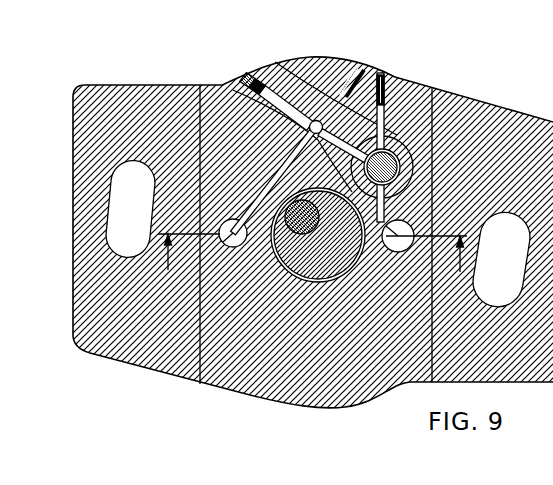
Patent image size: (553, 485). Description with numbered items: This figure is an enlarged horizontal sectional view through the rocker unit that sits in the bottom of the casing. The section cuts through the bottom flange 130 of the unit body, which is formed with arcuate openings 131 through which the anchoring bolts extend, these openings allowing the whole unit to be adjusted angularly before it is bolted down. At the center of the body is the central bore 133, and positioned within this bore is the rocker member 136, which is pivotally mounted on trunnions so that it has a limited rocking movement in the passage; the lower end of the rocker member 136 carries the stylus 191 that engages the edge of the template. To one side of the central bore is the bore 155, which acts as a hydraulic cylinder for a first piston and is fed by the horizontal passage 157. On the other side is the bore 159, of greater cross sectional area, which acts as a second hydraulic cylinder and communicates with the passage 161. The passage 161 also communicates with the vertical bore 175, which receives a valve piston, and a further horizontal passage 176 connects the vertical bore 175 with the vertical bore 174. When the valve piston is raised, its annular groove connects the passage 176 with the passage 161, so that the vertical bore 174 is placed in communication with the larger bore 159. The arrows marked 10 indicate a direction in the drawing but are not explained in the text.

The direction of movement 10 is at (315, 242).
The bottom flange 130 is at (172, 370).
The openings 131 is at (133, 163).
The central bore 133 is at (330, 278).
The rocker member 136 is at (317, 280).
The bore 155 is at (243, 246).
The horizontal passage 157 is at (275, 172).
The bore 159 is at (402, 251).
The passage 161 is at (386, 204).
The vertical bore 174 is at (309, 130).
The vertical bore 175 is at (382, 167).
The horizontal passage 176 is at (337, 159).
The stylus 191 is at (313, 237).